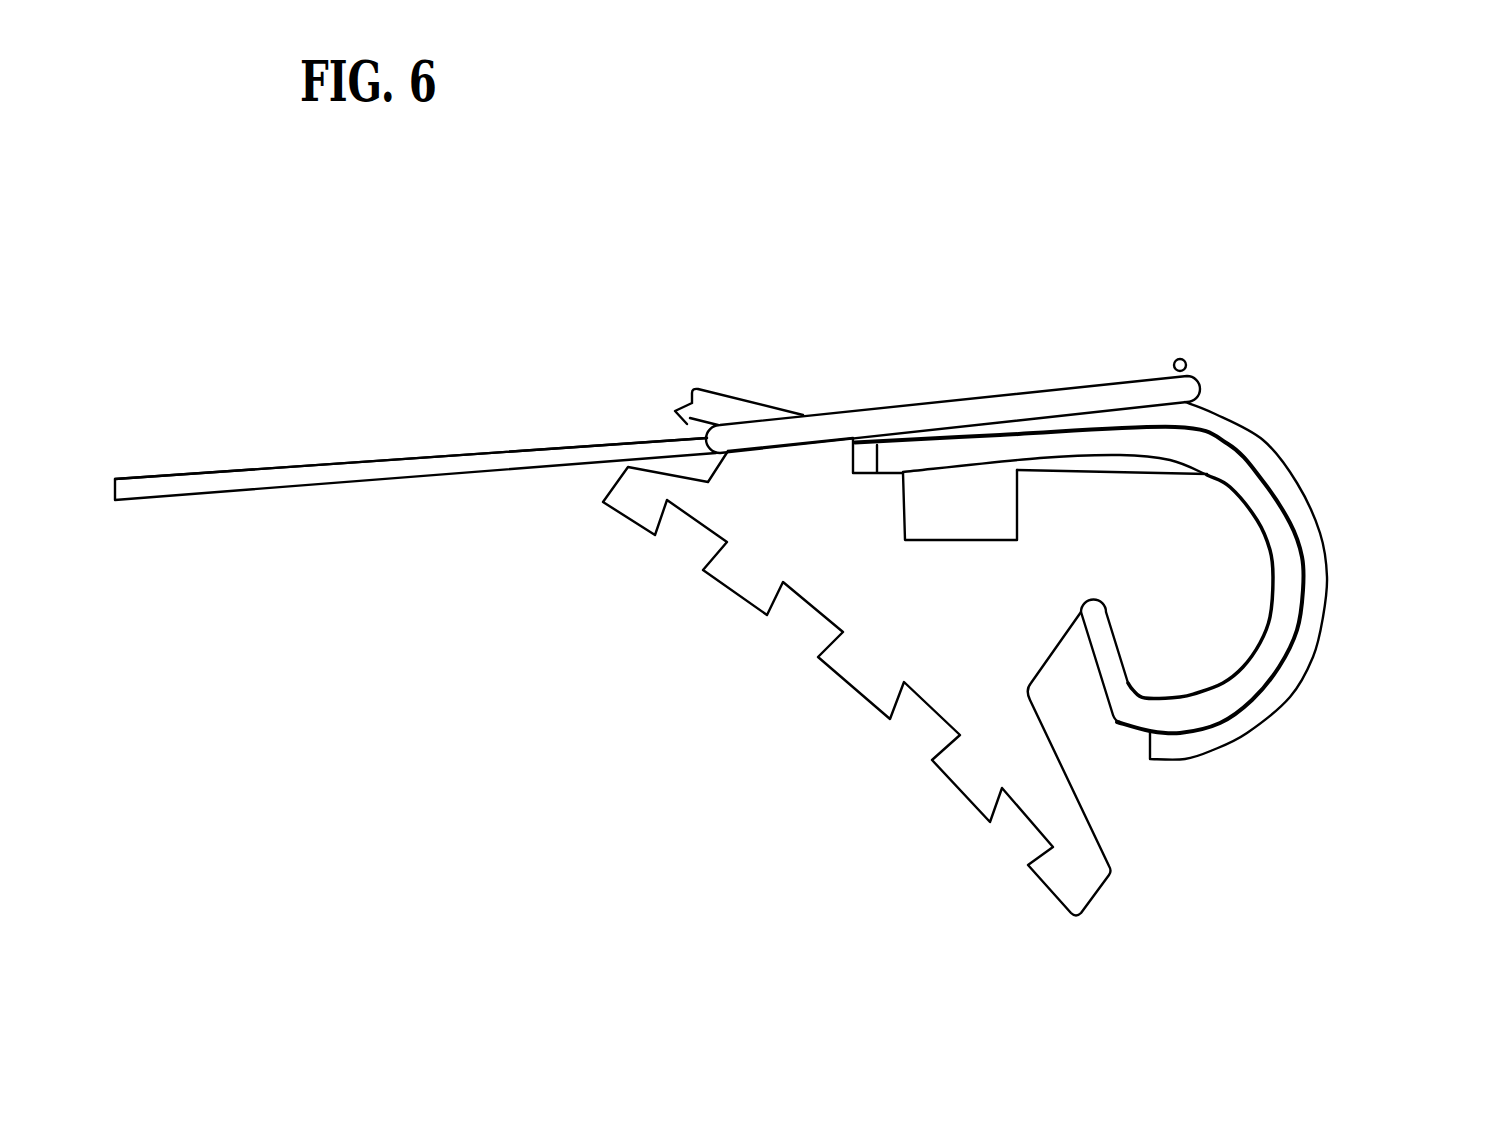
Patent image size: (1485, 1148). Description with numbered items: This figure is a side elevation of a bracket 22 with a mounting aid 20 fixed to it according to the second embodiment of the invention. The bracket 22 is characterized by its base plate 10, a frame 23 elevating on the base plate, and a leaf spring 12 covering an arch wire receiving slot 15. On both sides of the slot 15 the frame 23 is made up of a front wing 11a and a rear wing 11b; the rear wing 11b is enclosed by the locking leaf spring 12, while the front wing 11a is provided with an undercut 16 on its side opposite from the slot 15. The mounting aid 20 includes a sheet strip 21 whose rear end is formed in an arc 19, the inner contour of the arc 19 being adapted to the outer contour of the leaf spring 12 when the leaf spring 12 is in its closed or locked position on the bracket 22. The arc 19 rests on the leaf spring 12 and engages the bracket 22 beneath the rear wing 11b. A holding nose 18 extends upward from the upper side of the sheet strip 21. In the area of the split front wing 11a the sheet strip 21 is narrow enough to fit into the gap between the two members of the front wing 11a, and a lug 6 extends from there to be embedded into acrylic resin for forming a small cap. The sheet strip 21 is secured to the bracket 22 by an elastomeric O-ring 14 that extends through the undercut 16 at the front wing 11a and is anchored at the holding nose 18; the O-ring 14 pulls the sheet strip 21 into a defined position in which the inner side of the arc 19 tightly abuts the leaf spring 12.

The lug 6 is at (260, 477).
The sheet strip 21 is at (390, 467).
The O-ring 14 is at (950, 403).
The undercut 16 is at (690, 388).
The holding nose 18 is at (1185, 359).
The base plate 10 is at (867, 670).
The front wing 11a is at (787, 463).
The rear wing 11b is at (1198, 652).
The arch wire receiving slot 15 is at (947, 515).
The leaf spring 12 is at (1225, 458).
The arc 19 is at (1287, 673).
The frame 23 is at (1093, 560).
The mounting aid 20 is at (846, 253).
The bracket 22 is at (1148, 847).